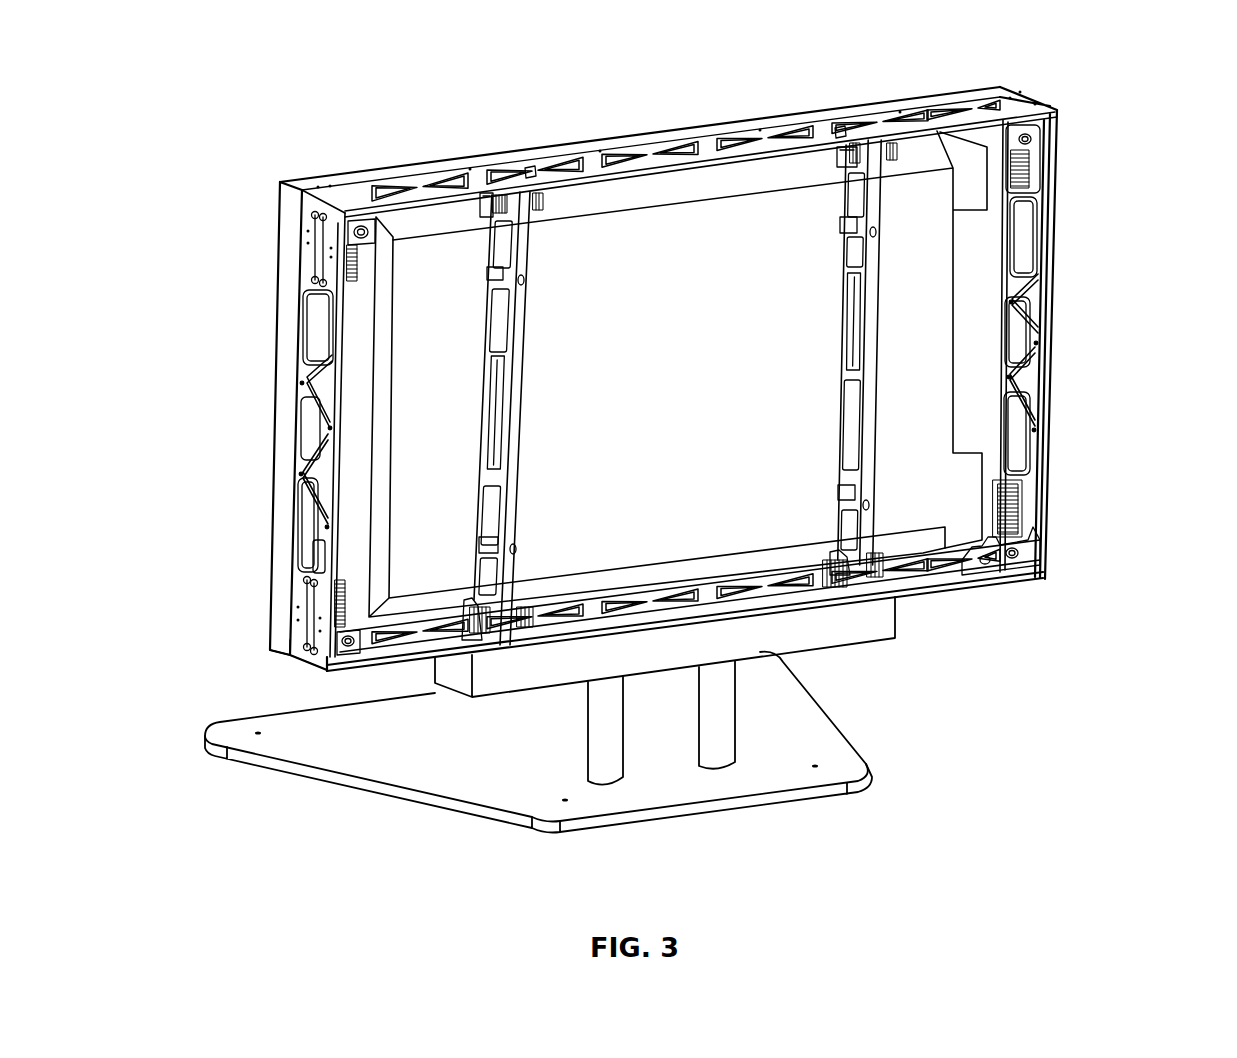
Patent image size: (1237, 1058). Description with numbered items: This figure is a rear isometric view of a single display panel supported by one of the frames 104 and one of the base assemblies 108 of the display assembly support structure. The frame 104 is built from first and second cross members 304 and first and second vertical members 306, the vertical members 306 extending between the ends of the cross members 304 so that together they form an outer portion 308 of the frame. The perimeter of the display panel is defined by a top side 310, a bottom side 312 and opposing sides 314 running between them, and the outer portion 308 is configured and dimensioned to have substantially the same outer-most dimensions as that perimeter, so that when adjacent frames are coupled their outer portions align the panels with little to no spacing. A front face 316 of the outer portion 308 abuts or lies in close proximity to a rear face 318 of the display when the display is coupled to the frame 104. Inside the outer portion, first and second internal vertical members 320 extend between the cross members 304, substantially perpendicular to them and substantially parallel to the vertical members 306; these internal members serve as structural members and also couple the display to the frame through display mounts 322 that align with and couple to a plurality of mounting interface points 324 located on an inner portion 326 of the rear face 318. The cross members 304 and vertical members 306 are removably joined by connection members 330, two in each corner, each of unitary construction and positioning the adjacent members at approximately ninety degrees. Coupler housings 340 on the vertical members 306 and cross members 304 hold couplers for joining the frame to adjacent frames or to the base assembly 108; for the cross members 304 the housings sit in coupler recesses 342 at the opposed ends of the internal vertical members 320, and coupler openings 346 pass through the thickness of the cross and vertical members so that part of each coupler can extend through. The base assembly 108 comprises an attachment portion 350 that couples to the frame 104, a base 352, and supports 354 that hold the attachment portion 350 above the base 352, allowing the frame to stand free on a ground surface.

The frame 104 is at (1133, 72).
The base assembly 108 is at (975, 694).
The cross member 304 is at (612, 150).
The vertical member 306 is at (322, 430).
The outer portion 308 is at (416, 145).
The top side 310 is at (465, 165).
The bottom side 312 is at (277, 660).
The opposing side 314 is at (1012, 85).
The front face 316 is at (290, 638).
The rear face 318 is at (353, 430).
The internal vertical member 320 is at (517, 398).
The display mount 322 is at (530, 278).
The mounting interface point 324 is at (487, 278).
The inner portion 326 is at (698, 396).
The connection member 330 is at (1030, 545).
The coupler housing 340 is at (1028, 178).
The coupler recess 342 is at (838, 176).
The coupler opening 346 is at (530, 172).
The attachment portion 350 is at (701, 657).
The base 352 is at (460, 751).
The support 354 is at (603, 712).